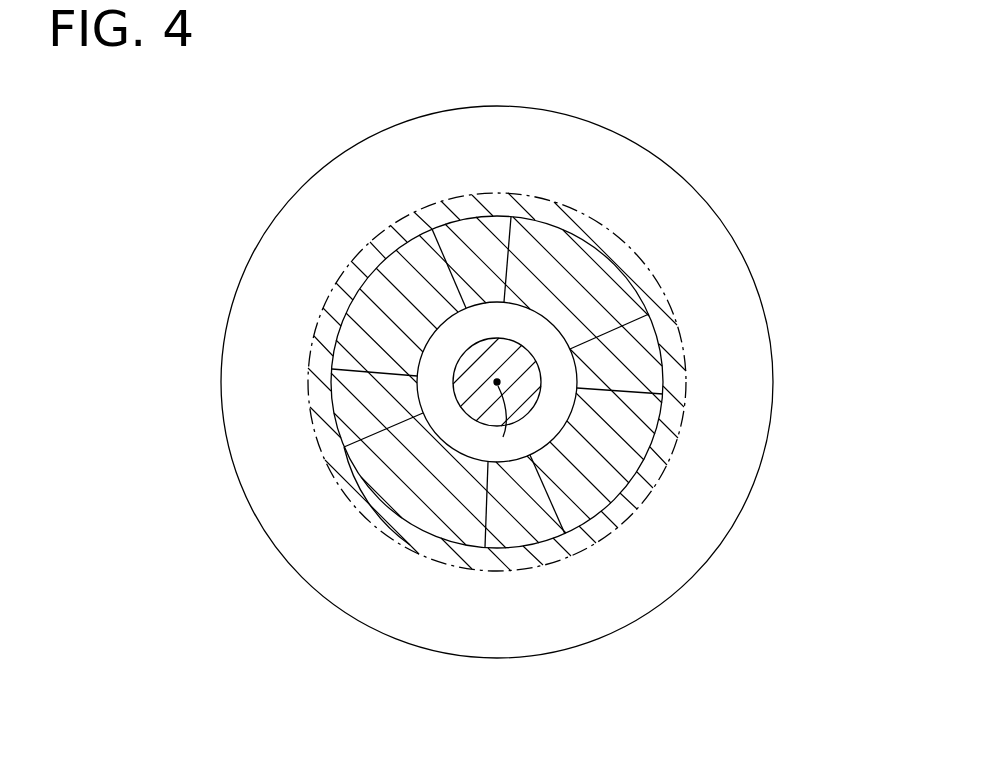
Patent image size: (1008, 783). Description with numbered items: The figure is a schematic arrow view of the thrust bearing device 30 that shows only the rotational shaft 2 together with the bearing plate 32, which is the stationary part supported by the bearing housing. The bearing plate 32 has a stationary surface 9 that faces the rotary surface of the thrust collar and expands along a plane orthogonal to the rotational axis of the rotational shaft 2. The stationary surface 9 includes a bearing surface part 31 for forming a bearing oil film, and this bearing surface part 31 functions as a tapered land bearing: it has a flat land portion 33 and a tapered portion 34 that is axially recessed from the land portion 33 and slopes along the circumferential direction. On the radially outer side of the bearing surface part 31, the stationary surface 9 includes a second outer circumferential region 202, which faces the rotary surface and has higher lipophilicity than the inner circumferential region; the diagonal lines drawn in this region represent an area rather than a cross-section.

The thrust bearing device 30 is at (806, 109).
The bearing plate 32 is at (672, 185).
The stationary surface 9 is at (674, 278).
The second outer circumferential region 202 is at (488, 200).
The bearing surface part 31 is at (612, 297).
The land portion 33 is at (517, 523).
The tapered portion 34 is at (407, 493).
The rotational shaft 2 is at (531, 391).